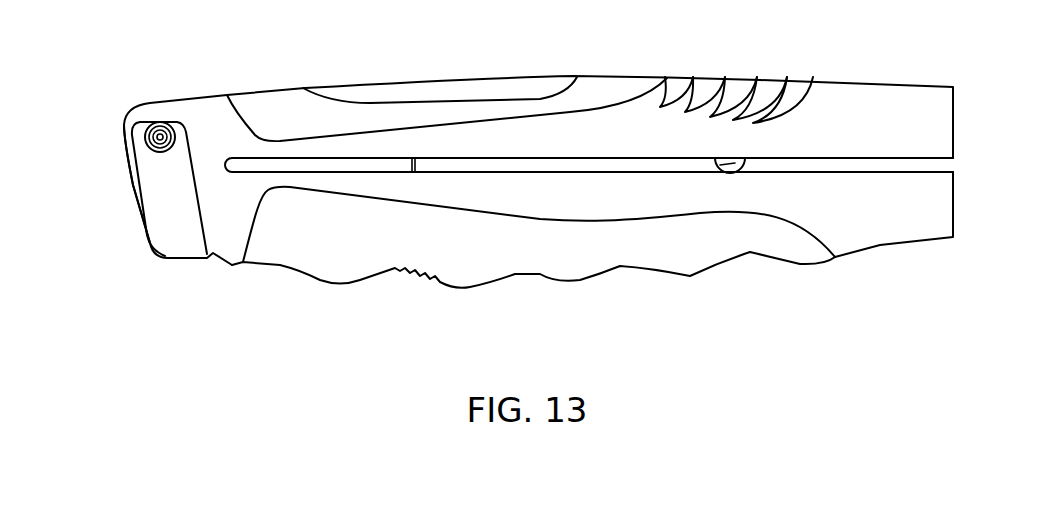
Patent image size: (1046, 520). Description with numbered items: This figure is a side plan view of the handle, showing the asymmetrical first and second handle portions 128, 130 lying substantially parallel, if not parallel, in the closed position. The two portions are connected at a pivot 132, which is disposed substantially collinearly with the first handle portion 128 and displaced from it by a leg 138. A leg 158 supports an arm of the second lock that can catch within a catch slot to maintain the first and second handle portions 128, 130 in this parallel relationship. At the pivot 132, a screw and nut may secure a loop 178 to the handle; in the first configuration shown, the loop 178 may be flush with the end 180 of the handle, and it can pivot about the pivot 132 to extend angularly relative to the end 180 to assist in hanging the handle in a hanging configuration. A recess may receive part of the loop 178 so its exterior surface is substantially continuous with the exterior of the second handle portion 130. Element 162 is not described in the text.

The first handle portion 128 is at (718, 51).
The second handle portion 130 is at (786, 278).
The pivot 132 is at (160, 135).
The leg 138 is at (129, 100).
The leg 158 is at (413, 165).
The second detent 162 is at (733, 163).
The loop 178 is at (172, 262).
The end 180 is at (134, 203).